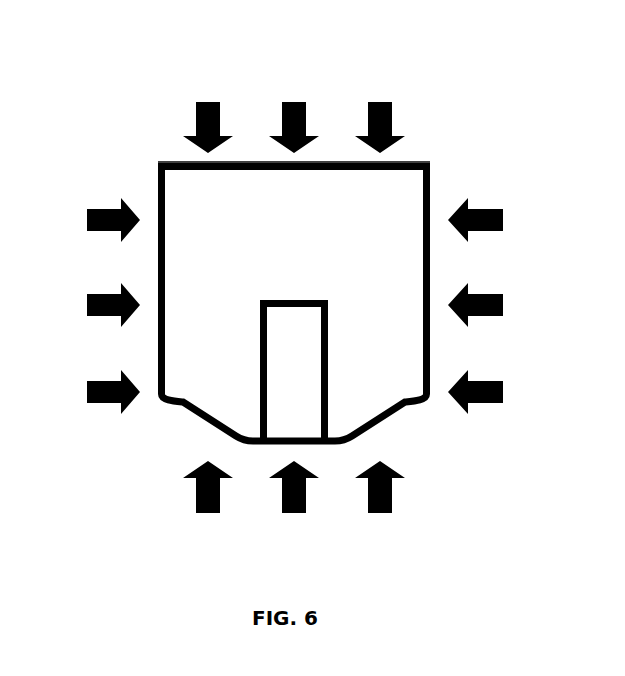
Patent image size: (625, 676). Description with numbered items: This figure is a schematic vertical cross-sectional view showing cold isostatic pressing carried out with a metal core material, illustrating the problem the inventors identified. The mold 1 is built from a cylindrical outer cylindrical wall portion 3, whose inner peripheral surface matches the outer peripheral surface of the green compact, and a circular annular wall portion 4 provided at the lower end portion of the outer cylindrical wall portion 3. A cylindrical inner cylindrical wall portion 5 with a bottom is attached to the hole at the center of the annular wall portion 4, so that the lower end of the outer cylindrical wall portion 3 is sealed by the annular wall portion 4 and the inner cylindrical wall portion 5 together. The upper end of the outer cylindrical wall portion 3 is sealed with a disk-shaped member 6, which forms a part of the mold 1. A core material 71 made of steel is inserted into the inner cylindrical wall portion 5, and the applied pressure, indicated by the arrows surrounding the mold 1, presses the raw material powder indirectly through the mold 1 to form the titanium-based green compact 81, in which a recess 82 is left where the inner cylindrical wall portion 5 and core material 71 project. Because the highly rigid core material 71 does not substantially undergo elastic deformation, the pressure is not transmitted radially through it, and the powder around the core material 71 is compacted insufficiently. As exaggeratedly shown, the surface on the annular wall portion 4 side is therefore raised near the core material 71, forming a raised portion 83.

The mold 1 is at (136, 126).
The outer cylindrical wall portion 3 is at (432, 346).
The annular wall portion 4 is at (208, 416).
The inner cylindrical wall portion 5 is at (342, 428).
The disc-shaped member 6 is at (407, 163).
The core material 71 is at (312, 431).
The titanium-based green compact 81 is at (411, 206).
The recess 82 is at (273, 432).
The raised portion 83 is at (356, 439).